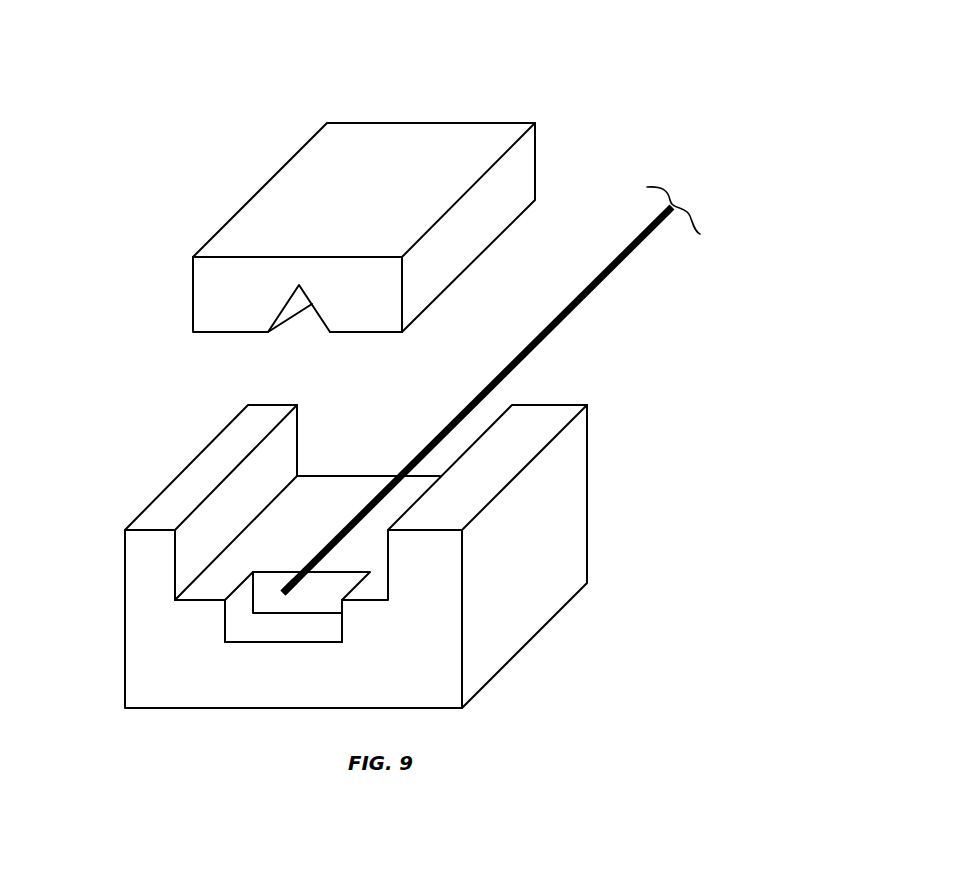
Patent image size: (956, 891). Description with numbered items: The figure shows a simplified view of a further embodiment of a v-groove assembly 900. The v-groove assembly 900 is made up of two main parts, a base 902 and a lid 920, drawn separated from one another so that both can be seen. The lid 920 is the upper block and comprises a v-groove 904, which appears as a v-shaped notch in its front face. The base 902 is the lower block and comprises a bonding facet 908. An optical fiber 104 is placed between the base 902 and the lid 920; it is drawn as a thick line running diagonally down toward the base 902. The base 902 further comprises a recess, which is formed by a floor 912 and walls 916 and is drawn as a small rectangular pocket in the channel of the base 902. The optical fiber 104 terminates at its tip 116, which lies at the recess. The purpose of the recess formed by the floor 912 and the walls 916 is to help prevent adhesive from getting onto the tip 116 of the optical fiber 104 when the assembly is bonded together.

The v-groove assembly 900 is at (680, 78).
The lid 920 is at (322, 248).
The v-groove 904 is at (290, 315).
The optical fiber 104 is at (602, 267).
The tip 116 is at (284, 588).
The base 902 is at (307, 556).
The bonding facet 908 is at (142, 685).
The floor 912 is at (337, 635).
The walls 916 is at (340, 625).